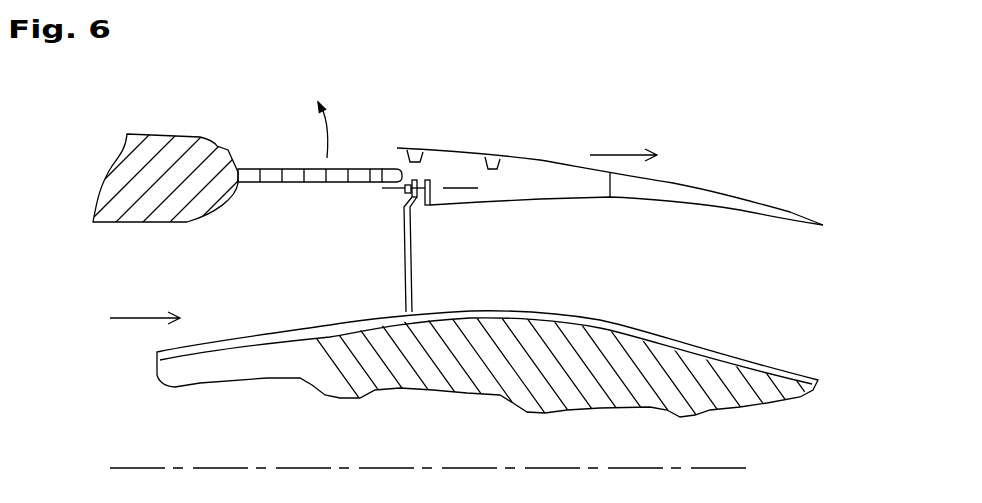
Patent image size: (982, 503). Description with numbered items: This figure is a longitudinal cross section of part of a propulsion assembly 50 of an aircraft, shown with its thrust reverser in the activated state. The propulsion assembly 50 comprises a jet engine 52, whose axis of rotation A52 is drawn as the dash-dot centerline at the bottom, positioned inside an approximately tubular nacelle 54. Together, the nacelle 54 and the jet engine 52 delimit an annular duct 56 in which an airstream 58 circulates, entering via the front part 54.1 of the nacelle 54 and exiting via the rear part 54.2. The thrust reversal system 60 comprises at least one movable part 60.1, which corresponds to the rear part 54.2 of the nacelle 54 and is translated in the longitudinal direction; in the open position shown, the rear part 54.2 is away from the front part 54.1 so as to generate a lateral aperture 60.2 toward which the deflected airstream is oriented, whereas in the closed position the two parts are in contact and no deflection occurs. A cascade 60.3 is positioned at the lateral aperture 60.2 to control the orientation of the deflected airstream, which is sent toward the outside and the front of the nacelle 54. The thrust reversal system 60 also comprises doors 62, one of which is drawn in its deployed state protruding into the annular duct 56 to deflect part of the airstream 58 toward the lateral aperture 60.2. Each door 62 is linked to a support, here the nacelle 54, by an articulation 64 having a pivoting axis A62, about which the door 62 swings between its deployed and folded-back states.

The propulsion assembly 50 is at (67, 268).
The jet engine 52 is at (740, 388).
The nacelle 54 is at (142, 128).
The front part 54.1 is at (125, 178).
The rear part 54.2 is at (724, 195).
The annular duct 56 is at (191, 270).
The airstream 58 is at (137, 318).
The thrust reversal system 60 is at (268, 148).
The movable part 60.1 is at (776, 207).
The lateral aperture 60.2 is at (342, 198).
The cascade 60.3 is at (357, 168).
The door 62 is at (413, 270).
The articulation 64 is at (423, 175).
The axis of rotation A52 is at (121, 468).
The pivoting axis A62 is at (462, 187).